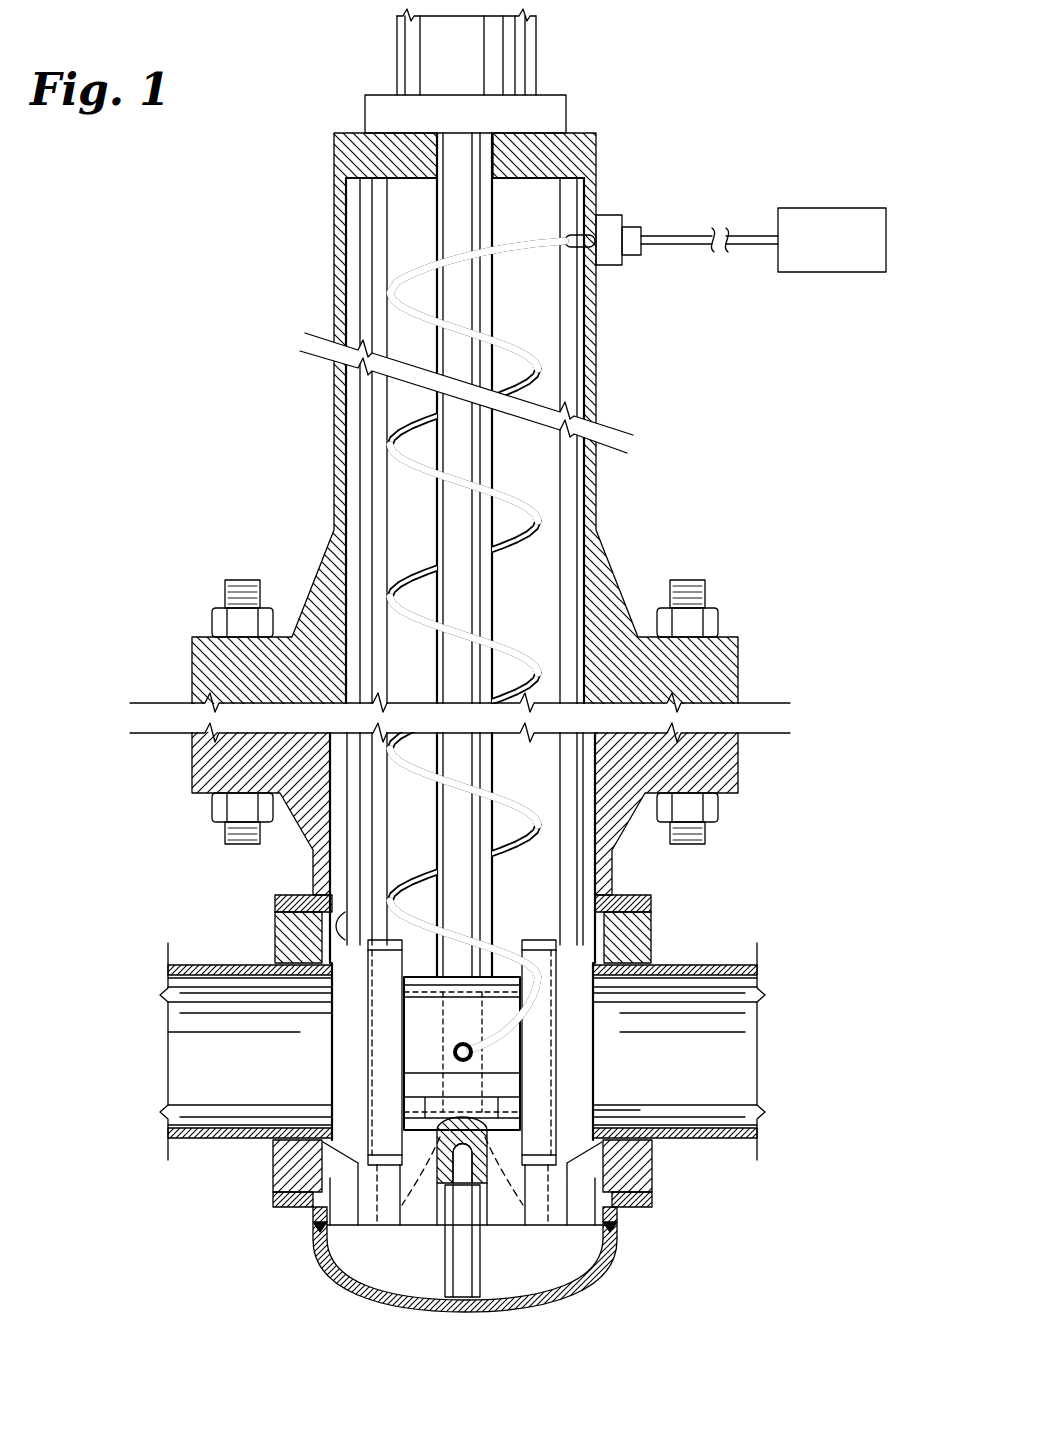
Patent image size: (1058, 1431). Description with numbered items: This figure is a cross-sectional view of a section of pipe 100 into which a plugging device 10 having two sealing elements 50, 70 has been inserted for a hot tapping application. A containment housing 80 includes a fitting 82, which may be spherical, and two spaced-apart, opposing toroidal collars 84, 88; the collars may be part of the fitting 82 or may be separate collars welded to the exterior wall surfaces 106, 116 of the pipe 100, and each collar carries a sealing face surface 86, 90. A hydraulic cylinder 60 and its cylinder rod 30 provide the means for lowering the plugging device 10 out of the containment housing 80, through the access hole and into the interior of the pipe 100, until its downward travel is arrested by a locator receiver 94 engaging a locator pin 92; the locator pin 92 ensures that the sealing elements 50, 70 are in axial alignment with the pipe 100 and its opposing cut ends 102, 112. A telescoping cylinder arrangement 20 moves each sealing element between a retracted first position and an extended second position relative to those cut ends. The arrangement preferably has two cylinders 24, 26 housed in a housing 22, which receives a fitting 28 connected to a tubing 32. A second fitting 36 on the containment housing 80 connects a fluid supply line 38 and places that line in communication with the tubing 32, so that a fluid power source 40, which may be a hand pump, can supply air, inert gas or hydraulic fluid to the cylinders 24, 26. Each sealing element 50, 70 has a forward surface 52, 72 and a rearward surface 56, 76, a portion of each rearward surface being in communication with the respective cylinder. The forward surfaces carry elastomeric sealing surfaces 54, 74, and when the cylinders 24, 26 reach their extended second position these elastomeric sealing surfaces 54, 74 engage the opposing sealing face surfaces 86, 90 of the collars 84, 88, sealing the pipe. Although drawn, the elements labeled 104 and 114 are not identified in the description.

The plugging device 10 is at (673, 900).
The telescoping cylinder arrangement 20 is at (422, 1205).
The housing 22 is at (492, 1135).
The cylinder 24 is at (402, 1175).
The cylinder 26 is at (527, 1175).
The fitting 28 is at (405, 1057).
The cylinder rod 30 is at (448, 508).
The tubing 32 is at (397, 285).
The second fitting 36 is at (608, 225).
The fluid supply line 38 is at (737, 240).
The fluid power source 40 is at (846, 220).
The sealing element 50 is at (385, 1045).
The forward surface 52 is at (300, 1207).
The elastomeric sealing surface 54 is at (368, 1098).
The rearward surface 56 is at (412, 955).
The hydraulic cylinder 60 is at (515, 62).
The sealing element 70 is at (560, 1040).
The forward surface 72 is at (575, 1163).
The elastomeric sealing surface 74 is at (560, 1078).
The rearward surface 76 is at (515, 943).
The containment housing 80 is at (297, 570).
The fitting 82 is at (608, 1250).
The toroidal collar 84 is at (277, 933).
The sealing face surface 86 is at (317, 895).
The toroidal collar 88 is at (640, 935).
The sealing face surface 90 is at (613, 897).
The locator pin 92 is at (462, 1278).
The locator receiver 94 is at (437, 1133).
The pipe 100 is at (703, 963).
The cut end 102 is at (322, 1157).
The inlet conduit 104 is at (205, 995).
The exterior wall surface 106 is at (200, 963).
The cut end 112 is at (590, 1120).
The outlet conduit 114 is at (703, 978).
The exterior wall surface 116 is at (730, 1148).